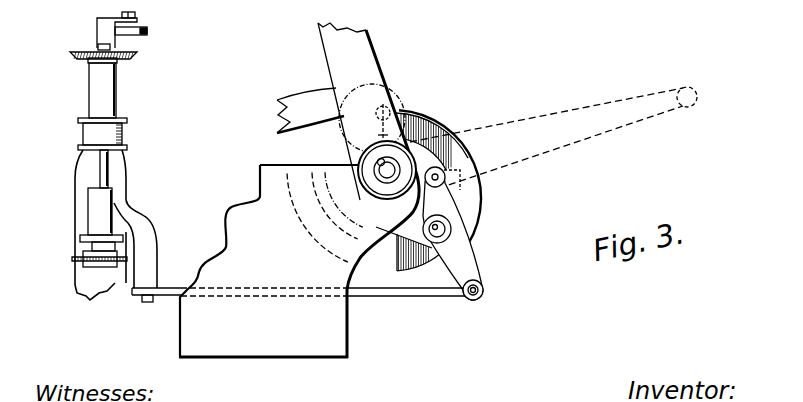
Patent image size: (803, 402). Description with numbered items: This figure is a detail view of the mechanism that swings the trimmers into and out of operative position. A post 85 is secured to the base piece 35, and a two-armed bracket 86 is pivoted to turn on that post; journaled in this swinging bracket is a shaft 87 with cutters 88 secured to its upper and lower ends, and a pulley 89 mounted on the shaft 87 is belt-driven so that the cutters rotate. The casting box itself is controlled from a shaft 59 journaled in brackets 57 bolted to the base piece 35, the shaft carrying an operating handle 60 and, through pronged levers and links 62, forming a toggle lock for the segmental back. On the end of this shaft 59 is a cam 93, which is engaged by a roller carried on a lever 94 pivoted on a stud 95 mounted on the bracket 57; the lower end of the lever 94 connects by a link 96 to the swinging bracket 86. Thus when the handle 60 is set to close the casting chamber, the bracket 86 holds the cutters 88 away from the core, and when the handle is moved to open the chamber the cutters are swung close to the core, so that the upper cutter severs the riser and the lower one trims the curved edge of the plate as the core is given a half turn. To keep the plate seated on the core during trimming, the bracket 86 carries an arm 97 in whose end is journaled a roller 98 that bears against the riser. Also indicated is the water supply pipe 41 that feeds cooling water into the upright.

The base piece 35 is at (513, 0).
The water supply pipe 41 is at (553, 96).
The bracket 57 is at (310, 347).
The shaft 59 is at (385, 170).
The operating handle 60 is at (350, 48).
The link 62 is at (277, 113).
The post 85 is at (84, 283).
The two-armed bracket 86 is at (76, 190).
The shaft 87 is at (112, 175).
The cutter 88 is at (72, 56).
The pulley 89 is at (122, 136).
The cam 93 is at (423, 110).
The lever 94 is at (440, 204).
The stud 95 is at (449, 228).
The link 96 is at (423, 293).
The arm 97 is at (98, 32).
The roller 98 is at (147, 31).